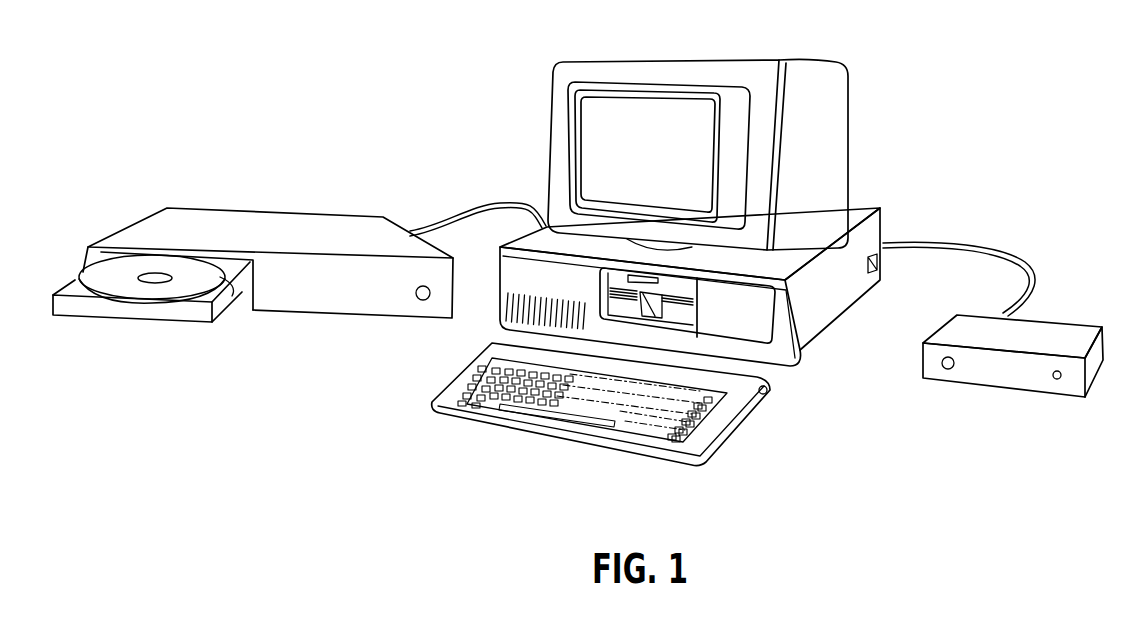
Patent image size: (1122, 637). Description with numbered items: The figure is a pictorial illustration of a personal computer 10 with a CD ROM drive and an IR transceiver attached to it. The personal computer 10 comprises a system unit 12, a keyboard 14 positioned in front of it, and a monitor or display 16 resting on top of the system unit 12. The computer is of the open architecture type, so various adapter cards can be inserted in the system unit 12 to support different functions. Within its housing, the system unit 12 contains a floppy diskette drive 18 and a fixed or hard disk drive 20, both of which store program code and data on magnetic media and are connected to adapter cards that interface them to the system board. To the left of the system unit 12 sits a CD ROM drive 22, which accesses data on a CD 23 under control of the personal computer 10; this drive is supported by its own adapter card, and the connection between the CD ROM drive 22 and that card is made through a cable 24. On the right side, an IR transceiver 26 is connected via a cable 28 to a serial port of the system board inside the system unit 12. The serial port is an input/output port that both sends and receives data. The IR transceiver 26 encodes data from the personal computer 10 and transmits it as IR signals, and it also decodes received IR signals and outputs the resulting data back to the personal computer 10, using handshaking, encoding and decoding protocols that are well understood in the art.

The personal computer 10 is at (537, 106).
The system unit 12 is at (708, 270).
The keyboard 14 is at (754, 409).
The monitor or display 16 is at (850, 105).
The floppy diskette drive 18 is at (605, 287).
The fixed or hard disk drive 20 is at (750, 318).
The CD ROM drive 22 is at (249, 280).
The CD 23 is at (98, 280).
The cable 24 is at (468, 217).
The IR transceiver 26 is at (1018, 388).
The cable 28 is at (930, 243).